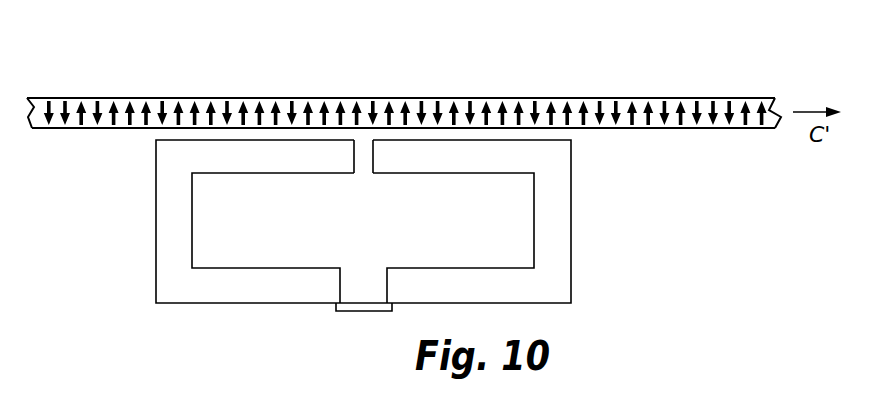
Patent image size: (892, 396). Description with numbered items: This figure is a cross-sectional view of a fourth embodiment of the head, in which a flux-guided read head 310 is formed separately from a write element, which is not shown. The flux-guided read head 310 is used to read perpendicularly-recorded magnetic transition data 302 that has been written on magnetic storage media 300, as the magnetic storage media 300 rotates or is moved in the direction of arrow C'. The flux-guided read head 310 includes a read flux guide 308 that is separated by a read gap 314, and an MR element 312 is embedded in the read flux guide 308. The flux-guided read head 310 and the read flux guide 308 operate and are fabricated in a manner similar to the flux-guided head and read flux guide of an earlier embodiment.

The magnetic storage media 300 is at (746, 98).
The perpendicularly-recorded magnetic transition data 302 is at (681, 108).
The read flux guide 308 is at (155, 158).
The flux-guided read head 310 is at (408, 253).
The MR element 312 is at (365, 312).
The read gap 314 is at (361, 168).